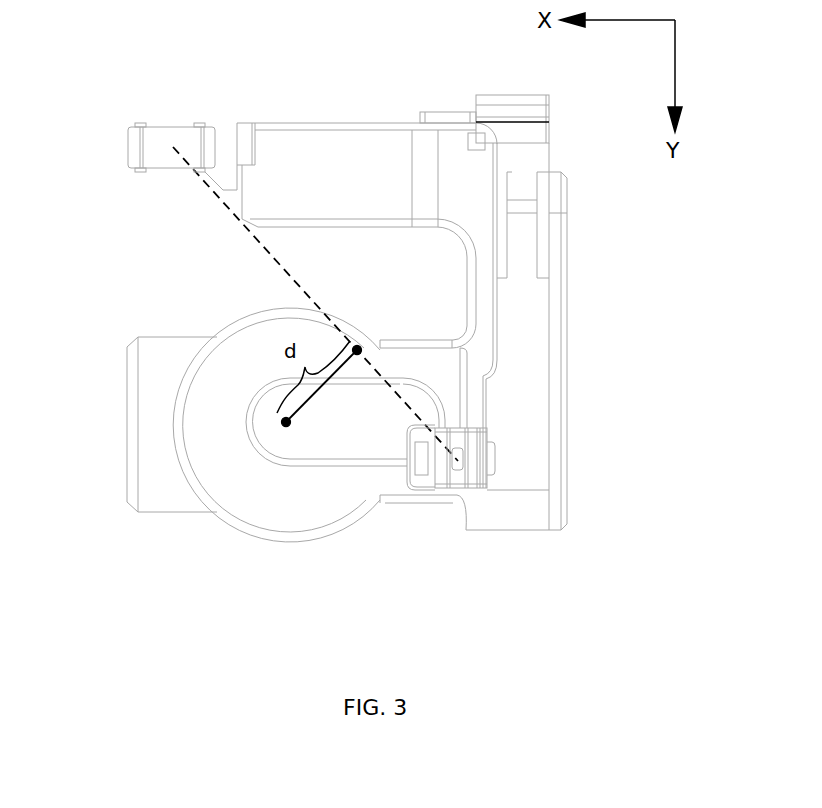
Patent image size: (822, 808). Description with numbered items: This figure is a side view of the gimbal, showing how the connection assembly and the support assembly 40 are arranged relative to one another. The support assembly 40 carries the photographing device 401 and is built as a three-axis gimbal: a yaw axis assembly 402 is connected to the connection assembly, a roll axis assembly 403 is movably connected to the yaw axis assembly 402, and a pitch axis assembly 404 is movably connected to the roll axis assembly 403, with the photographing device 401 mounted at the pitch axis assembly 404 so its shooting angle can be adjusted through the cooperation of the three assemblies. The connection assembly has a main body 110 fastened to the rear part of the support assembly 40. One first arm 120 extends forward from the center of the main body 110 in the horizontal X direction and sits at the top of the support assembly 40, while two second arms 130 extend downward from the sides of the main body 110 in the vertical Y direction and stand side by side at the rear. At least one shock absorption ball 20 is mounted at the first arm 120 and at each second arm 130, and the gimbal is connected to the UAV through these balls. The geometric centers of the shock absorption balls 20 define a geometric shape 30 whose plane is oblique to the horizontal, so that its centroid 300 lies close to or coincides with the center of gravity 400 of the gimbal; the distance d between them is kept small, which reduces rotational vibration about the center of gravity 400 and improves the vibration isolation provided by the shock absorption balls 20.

The shock absorption ball 20 is at (167, 148).
The geometric shape 30 is at (260, 247).
The support assembly 40 is at (383, 555).
The main body 110 is at (512, 125).
The first arm 120 is at (223, 148).
The second arm 130 is at (527, 400).
The centroid 300 is at (357, 350).
The center of gravity 400 is at (286, 422).
The photographing device 401 is at (153, 377).
The yaw axis assembly 402 is at (320, 167).
The roll axis assembly 403 is at (538, 510).
The pitch axis assembly 404 is at (232, 367).